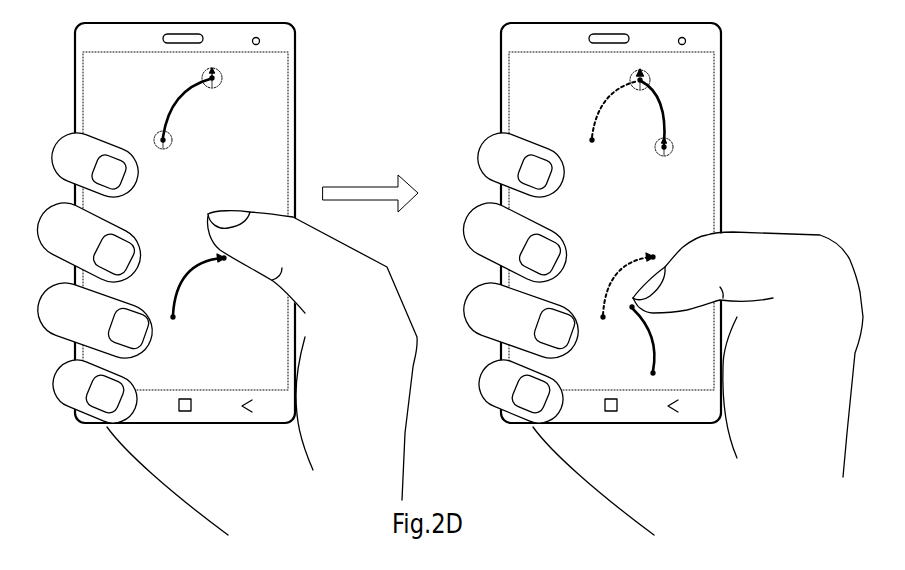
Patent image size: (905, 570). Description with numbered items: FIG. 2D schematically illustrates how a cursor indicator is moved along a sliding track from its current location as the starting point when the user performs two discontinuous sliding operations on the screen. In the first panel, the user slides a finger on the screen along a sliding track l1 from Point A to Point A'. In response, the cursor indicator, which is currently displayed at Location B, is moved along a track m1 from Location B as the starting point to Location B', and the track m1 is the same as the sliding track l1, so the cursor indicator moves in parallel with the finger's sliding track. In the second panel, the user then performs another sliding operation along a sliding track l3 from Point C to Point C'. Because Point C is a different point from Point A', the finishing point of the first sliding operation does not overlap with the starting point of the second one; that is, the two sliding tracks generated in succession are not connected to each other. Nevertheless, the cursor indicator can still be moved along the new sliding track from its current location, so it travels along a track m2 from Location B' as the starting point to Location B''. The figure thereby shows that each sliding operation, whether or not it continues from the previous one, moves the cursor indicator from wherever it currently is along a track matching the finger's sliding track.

The Point A is at (381, 321).
The Point A' is at (433, 265).
The Location B is at (363, 141).
The Location B' is at (434, 79).
The Location B'' is at (676, 147).
The Point C is at (628, 313).
The Point C' is at (643, 372).
The sliding track l1 is at (413, 284).
The sliding track l3 is at (643, 340).
The track m1 is at (399, 104).
The track m2 is at (662, 112).